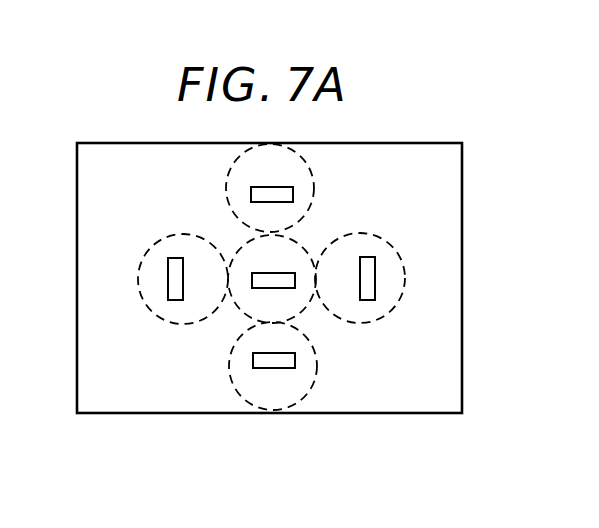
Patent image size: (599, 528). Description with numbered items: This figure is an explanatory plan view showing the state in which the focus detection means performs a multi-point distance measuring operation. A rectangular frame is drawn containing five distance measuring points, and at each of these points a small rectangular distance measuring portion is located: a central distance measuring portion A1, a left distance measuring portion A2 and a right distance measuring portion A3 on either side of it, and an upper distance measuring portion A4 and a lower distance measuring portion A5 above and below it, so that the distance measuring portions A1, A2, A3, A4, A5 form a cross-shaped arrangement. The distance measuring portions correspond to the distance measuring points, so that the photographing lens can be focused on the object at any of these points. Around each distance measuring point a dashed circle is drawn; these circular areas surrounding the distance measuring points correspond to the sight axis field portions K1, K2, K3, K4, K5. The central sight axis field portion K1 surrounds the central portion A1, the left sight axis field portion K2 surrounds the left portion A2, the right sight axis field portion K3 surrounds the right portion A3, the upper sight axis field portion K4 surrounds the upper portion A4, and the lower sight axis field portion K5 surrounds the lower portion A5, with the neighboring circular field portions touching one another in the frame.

The distance measuring portion A1 is at (273, 266).
The distance measuring portion A2 is at (190, 279).
The distance measuring portion A3 is at (351, 278).
The distance measuring portion A4 is at (272, 179).
The distance measuring portion A5 is at (274, 377).
The sight axis field portion K1 is at (290, 260).
The sight axis field portion K2 is at (183, 258).
The sight axis field portion K3 is at (360, 258).
The sight axis field portion K4 is at (291, 188).
The sight axis field portion K5 is at (292, 366).